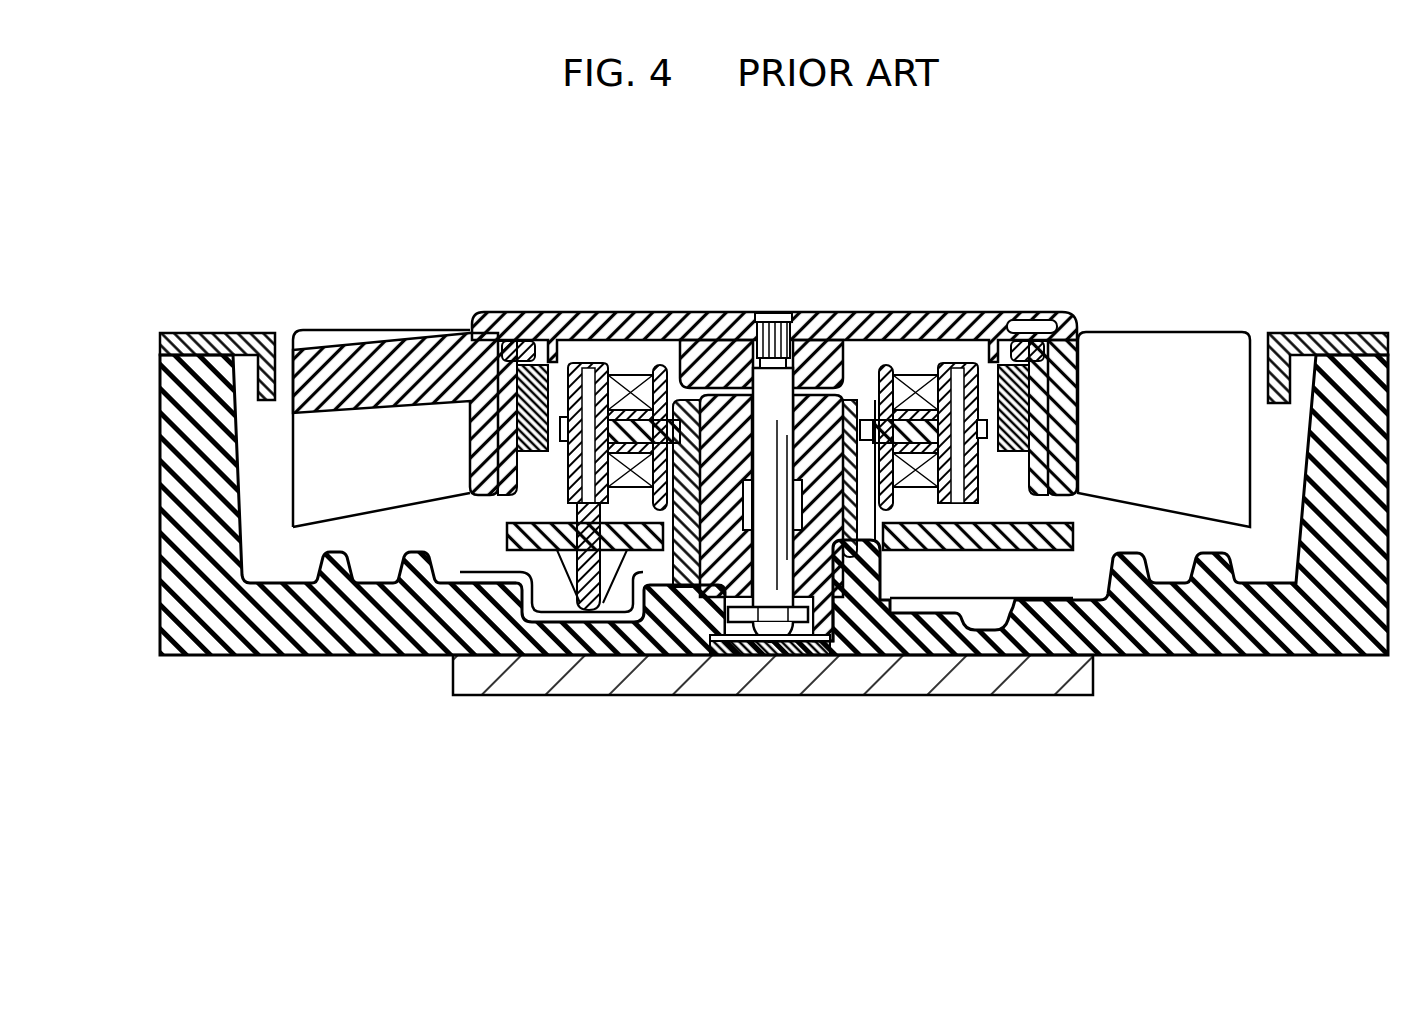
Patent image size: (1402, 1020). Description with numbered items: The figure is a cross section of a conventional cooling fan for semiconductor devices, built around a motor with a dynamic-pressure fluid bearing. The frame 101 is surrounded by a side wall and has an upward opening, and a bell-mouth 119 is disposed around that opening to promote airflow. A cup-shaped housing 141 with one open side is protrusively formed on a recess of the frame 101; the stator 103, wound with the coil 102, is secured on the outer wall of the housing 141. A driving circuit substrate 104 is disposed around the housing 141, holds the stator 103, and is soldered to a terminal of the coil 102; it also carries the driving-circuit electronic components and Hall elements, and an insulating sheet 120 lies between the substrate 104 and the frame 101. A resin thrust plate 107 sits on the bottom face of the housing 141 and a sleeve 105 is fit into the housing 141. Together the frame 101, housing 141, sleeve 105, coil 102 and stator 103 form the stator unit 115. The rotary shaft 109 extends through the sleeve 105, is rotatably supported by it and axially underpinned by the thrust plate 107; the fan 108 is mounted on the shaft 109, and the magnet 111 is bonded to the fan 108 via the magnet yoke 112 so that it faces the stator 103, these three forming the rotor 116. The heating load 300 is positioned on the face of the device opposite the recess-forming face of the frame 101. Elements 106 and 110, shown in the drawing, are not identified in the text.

The frame 101 is at (258, 655).
The coil 102 is at (927, 377).
The stator 103 is at (645, 455).
The driving circuit substrate 104 is at (517, 533).
The sleeve 105 is at (855, 600).
The thrust plate 106 is at (792, 650).
The thrust plate 107 is at (876, 677).
The fan 108 is at (392, 348).
The rotary shaft 109 is at (763, 622).
The thrust receiving plate 110 is at (720, 636).
The magnet 111 is at (1070, 320).
The magnet yoke 112 is at (522, 345).
The stator unit 115 is at (518, 657).
The rotor 116 is at (700, 312).
The bell-mouth 119 is at (1328, 333).
The insulating sheet 120 is at (1035, 600).
The housing 141 is at (849, 403).
The heating load 300 is at (1093, 683).